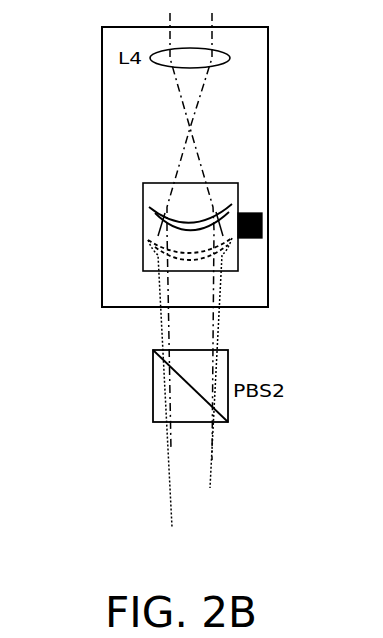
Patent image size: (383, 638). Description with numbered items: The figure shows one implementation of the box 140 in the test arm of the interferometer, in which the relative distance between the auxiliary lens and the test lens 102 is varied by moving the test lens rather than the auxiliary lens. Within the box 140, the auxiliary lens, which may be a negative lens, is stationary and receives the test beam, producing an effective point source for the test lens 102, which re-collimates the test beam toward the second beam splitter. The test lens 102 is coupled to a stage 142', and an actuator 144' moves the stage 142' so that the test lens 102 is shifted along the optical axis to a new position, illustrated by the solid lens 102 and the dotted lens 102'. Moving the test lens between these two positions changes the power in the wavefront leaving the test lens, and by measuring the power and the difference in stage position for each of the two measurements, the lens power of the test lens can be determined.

The box 140 is at (268, 28).
The stage 142' is at (257, 218).
The actuator 144' is at (298, 222).
The test lens 102 is at (131, 205).
The dotted lens 102' is at (127, 369).